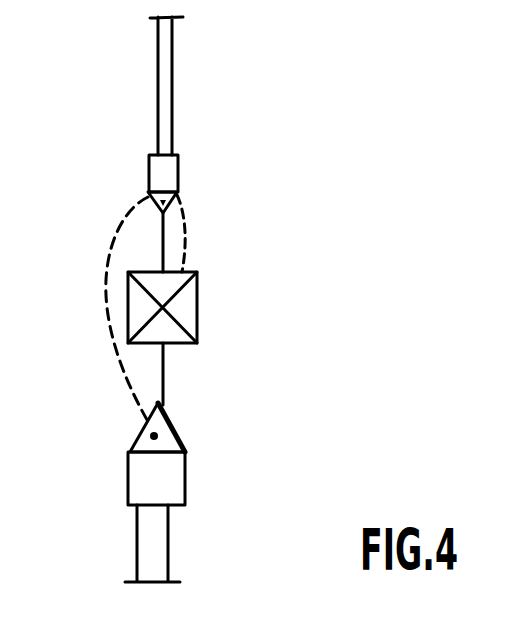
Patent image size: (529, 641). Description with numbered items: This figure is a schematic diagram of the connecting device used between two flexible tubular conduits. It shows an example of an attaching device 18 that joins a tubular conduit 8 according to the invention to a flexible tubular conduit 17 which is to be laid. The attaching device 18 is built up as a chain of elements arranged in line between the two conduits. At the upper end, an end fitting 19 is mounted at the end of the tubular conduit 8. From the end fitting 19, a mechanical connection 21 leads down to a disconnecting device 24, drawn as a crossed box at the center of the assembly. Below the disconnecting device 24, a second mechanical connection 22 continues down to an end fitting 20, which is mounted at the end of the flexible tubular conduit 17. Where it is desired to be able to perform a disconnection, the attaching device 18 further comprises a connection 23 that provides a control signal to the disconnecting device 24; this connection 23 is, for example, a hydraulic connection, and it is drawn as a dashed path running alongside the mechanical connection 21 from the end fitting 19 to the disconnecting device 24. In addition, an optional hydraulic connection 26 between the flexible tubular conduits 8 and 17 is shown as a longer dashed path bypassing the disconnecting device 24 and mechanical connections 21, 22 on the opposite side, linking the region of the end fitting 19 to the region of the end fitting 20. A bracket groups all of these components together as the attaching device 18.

The tubular conduit 8 is at (165, 78).
The flexible tubular conduit 17 is at (152, 557).
The attaching device 18 is at (295, 110).
The end fitting 19 is at (165, 171).
The end fitting 20 is at (163, 475).
The mechanical connection 21 is at (162, 236).
The mechanical connection 22 is at (162, 378).
The connection 23 is at (185, 238).
The disconnecting device 24 is at (197, 320).
The hydraulic connection 26 is at (121, 210).